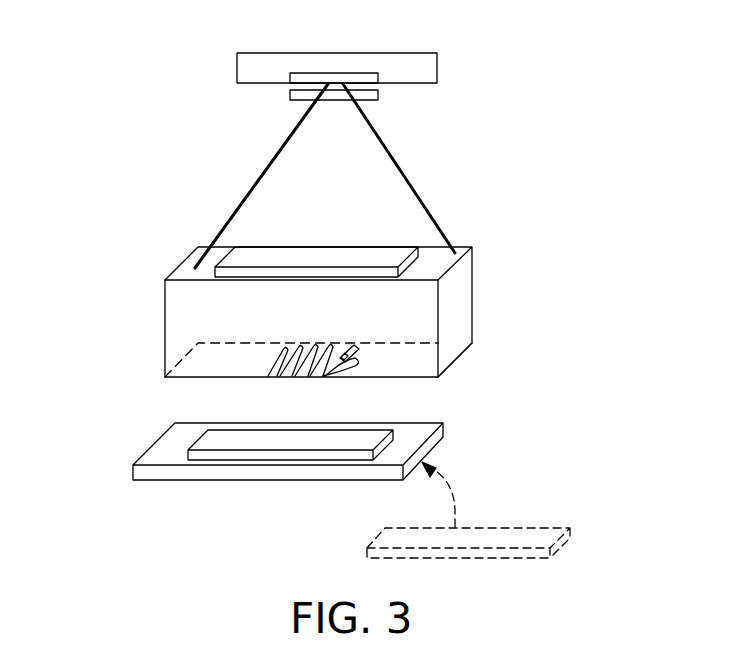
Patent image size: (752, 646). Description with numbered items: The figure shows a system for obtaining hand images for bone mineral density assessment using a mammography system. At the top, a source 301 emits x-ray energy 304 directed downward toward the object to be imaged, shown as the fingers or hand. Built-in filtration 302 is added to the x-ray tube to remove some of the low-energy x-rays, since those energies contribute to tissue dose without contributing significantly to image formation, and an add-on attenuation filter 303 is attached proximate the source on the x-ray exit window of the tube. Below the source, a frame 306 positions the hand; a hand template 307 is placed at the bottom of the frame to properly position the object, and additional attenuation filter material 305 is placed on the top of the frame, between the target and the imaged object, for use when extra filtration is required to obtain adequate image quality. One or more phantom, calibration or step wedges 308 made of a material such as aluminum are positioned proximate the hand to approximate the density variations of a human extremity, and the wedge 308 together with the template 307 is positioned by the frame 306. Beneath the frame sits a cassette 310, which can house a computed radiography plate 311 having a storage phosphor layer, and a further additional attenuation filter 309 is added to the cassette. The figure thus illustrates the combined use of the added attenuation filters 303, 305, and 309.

The source 301 is at (437, 69).
The built-in filtration 302 is at (302, 73).
The additional attenuation filter 303 is at (378, 95).
The x-ray energy 304 is at (417, 190).
The additional attenuation filter material 305 is at (407, 241).
The frame 306 is at (467, 286).
The hand template 307 is at (452, 357).
The phantom/calibration/step wedge 308 is at (355, 345).
The additional attenuation filter 309 is at (385, 425).
The cassette 310 is at (153, 445).
The computed radiography plate 311 is at (568, 532).